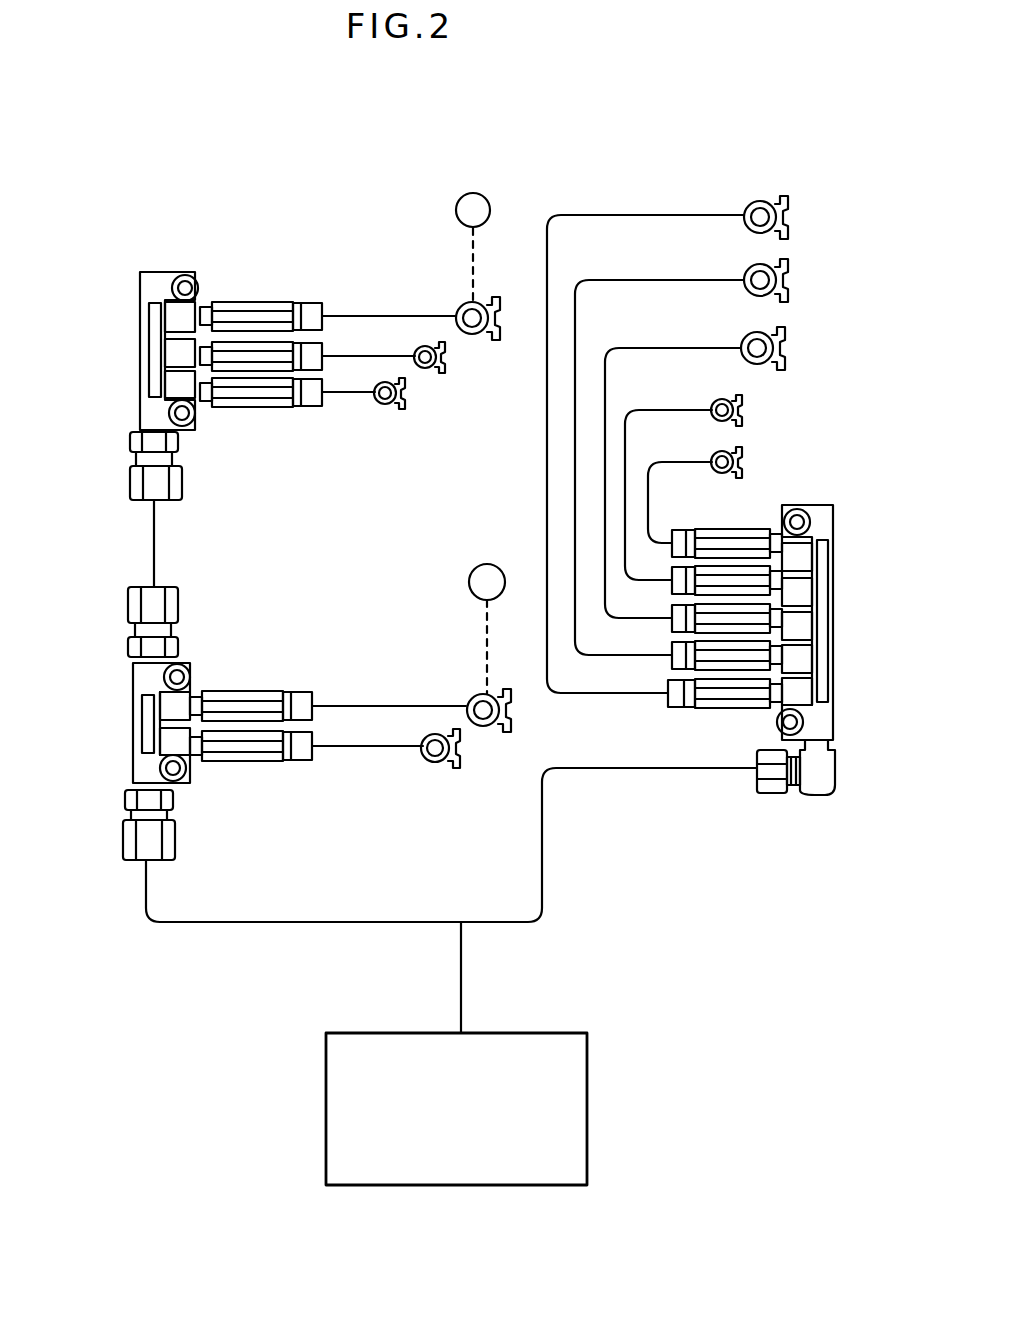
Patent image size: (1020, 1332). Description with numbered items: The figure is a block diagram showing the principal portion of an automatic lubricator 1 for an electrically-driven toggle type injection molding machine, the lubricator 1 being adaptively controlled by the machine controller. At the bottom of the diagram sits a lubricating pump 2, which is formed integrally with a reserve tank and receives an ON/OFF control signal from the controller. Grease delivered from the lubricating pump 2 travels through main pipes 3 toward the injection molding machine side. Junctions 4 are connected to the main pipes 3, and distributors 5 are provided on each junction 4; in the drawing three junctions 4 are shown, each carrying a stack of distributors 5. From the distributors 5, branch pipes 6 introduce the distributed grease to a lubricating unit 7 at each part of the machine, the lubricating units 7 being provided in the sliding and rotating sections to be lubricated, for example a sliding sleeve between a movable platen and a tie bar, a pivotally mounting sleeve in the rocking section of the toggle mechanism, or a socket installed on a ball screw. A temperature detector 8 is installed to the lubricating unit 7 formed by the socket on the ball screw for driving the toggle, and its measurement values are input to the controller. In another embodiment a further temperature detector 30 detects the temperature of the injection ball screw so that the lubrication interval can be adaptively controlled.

The automatic lubricator 1 is at (714, 118).
The lubricating pump 2 is at (560, 1033).
The main pipe 3 is at (154, 543).
The junction 4 is at (125, 306).
The distributor 5 is at (234, 312).
The branch pipe 6 is at (331, 314).
The lubricating unit 7 is at (390, 407).
The temperature detector 8 is at (473, 246).
The temperature detector 30 is at (487, 629).